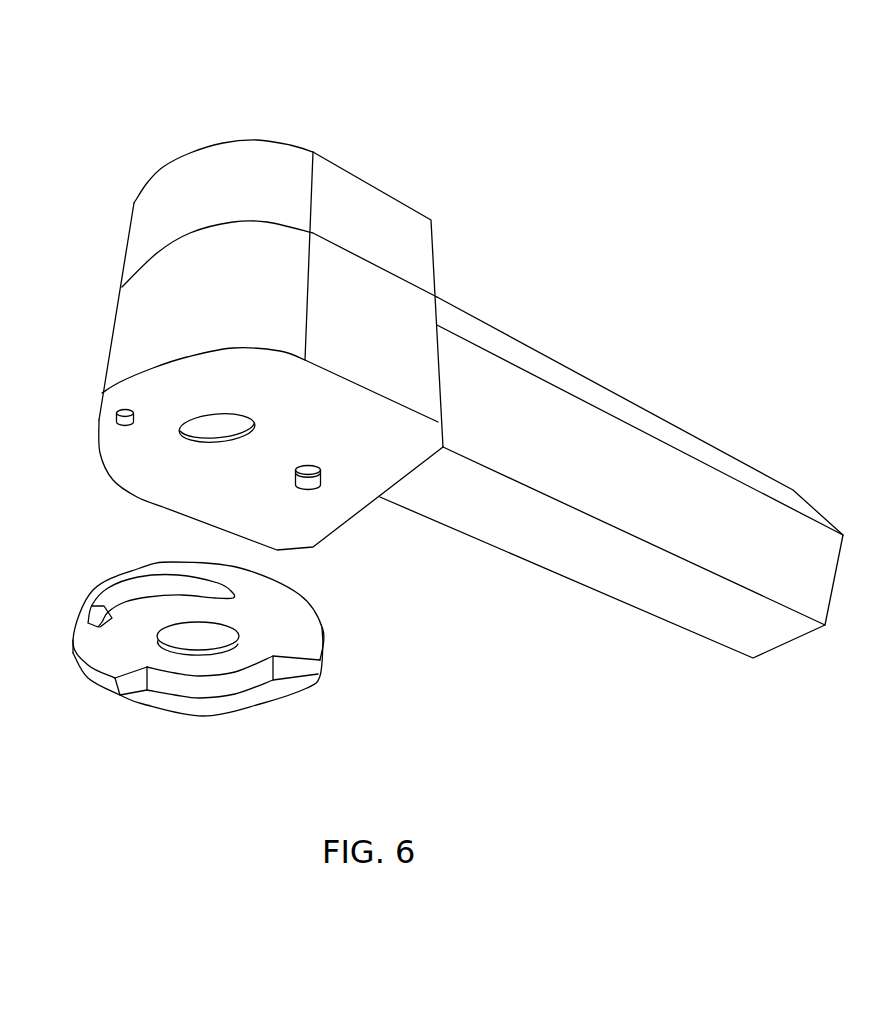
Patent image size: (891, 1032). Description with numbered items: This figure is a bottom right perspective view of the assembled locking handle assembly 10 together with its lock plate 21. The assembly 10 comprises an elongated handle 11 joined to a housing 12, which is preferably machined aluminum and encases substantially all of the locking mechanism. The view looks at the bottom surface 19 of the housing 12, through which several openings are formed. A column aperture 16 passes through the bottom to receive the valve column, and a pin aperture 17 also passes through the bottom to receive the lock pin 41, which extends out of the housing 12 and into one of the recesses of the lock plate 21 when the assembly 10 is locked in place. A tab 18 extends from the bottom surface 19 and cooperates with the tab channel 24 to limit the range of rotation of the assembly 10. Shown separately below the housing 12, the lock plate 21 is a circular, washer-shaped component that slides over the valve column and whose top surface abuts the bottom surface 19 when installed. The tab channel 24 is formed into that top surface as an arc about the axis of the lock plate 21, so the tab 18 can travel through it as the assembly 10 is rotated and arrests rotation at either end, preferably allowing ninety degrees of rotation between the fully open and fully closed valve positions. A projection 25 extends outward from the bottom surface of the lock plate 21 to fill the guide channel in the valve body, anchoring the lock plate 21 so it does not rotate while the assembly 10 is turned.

The assembly 10 is at (605, 72).
The handle 11 is at (643, 410).
The housing 12 is at (225, 143).
The column aperture 16 is at (220, 455).
The pin aperture 17 is at (315, 463).
The tab 18 is at (110, 452).
The bottom surface 19 is at (315, 429).
The lock pin 41 is at (312, 490).
The lock plate 21 is at (80, 586).
The tab channel 24 is at (95, 632).
The projection 25 is at (283, 702).